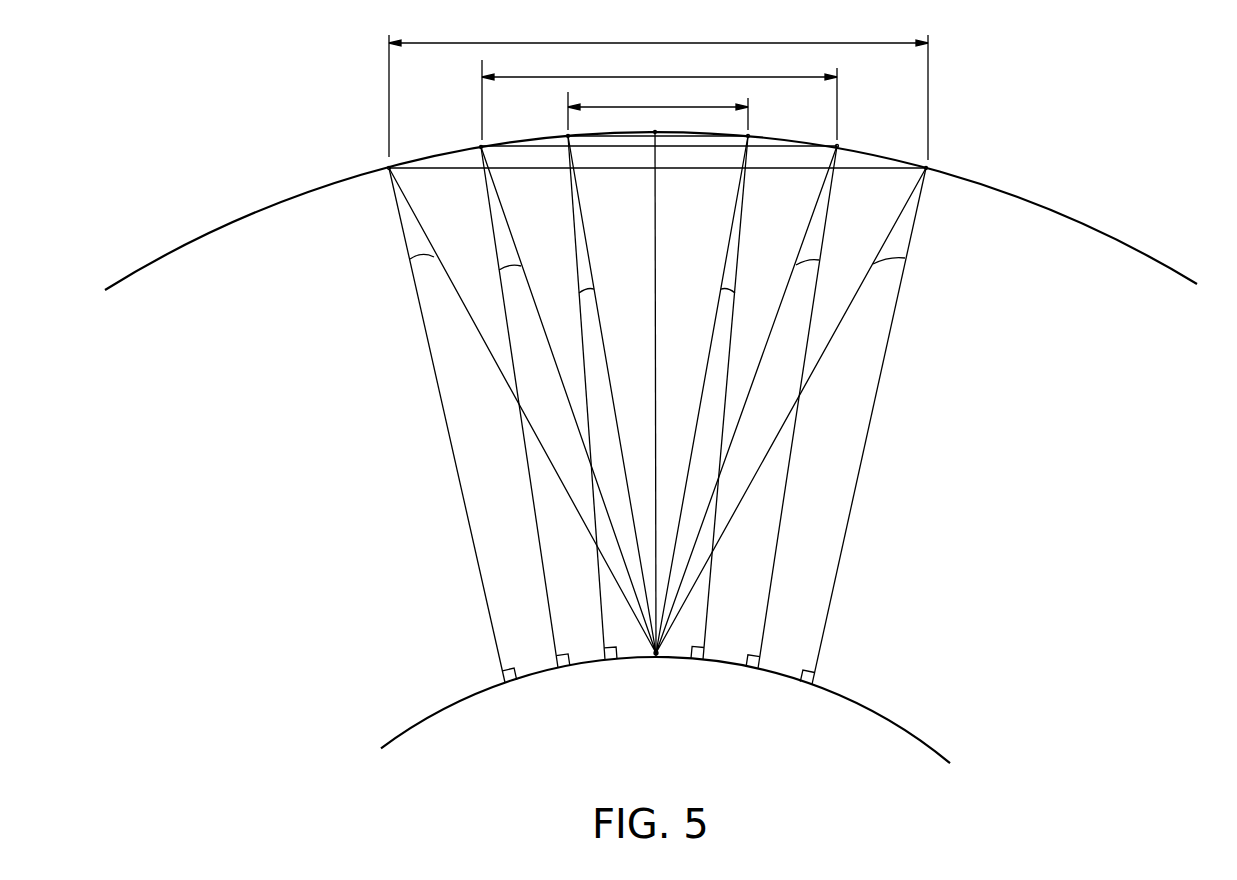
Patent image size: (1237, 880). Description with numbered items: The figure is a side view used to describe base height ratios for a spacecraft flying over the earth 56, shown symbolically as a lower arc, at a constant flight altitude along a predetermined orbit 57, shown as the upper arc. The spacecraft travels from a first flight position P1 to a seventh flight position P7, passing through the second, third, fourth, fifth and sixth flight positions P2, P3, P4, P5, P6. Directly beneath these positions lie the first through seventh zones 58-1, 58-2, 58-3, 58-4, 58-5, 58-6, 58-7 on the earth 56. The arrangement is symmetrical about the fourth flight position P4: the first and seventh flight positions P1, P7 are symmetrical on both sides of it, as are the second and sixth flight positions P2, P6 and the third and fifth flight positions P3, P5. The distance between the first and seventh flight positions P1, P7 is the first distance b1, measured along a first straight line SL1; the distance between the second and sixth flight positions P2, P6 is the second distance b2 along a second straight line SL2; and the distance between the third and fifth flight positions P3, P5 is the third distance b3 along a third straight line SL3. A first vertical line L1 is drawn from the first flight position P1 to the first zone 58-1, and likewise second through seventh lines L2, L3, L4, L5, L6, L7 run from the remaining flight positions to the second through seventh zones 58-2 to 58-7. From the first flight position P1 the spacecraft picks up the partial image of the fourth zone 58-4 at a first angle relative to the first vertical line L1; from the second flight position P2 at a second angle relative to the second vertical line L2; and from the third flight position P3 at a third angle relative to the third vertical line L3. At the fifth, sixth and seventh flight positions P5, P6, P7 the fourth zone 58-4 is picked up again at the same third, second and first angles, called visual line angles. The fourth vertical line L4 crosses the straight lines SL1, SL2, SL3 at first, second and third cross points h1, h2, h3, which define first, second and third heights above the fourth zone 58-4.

The earth 56 is at (905, 727).
The predetermined orbit 57 is at (1093, 230).
The first zone 58-1 is at (812, 688).
The second zone 58-2 is at (757, 671).
The third zone 58-3 is at (703, 662).
The fourth zone 58-4 is at (656, 666).
The fifth zone 58-5 is at (606, 662).
The sixth zone 58-6 is at (559, 670).
The seventh zone 58-7 is at (505, 686).
The first flight position P1 is at (946, 149).
The second flight position P2 is at (856, 132).
The third flight position P3 is at (766, 122).
The fourth flight position P4 is at (661, 120).
The fifth flight position P5 is at (549, 122).
The sixth flight position P6 is at (463, 133).
The seventh flight position P7 is at (366, 149).
The first vertical line L1 is at (912, 240).
The second vertical line L2 is at (825, 237).
The third vertical line L3 is at (741, 237).
The fourth vertical line L4 is at (658, 245).
The fifth line L5 is at (574, 240).
The sixth line L6 is at (494, 243).
The seventh line L7 is at (406, 247).
The first straight line SL1 is at (872, 169).
The second straight line SL2 is at (790, 148).
The third straight line SL3 is at (694, 138).
The first cross point h1 is at (648, 173).
The second cross point h2 is at (648, 148).
The third cross point h3 is at (648, 138).
The first distance b1 is at (658, 92).
The second distance b2 is at (659, 100).
The third distance b3 is at (658, 110).